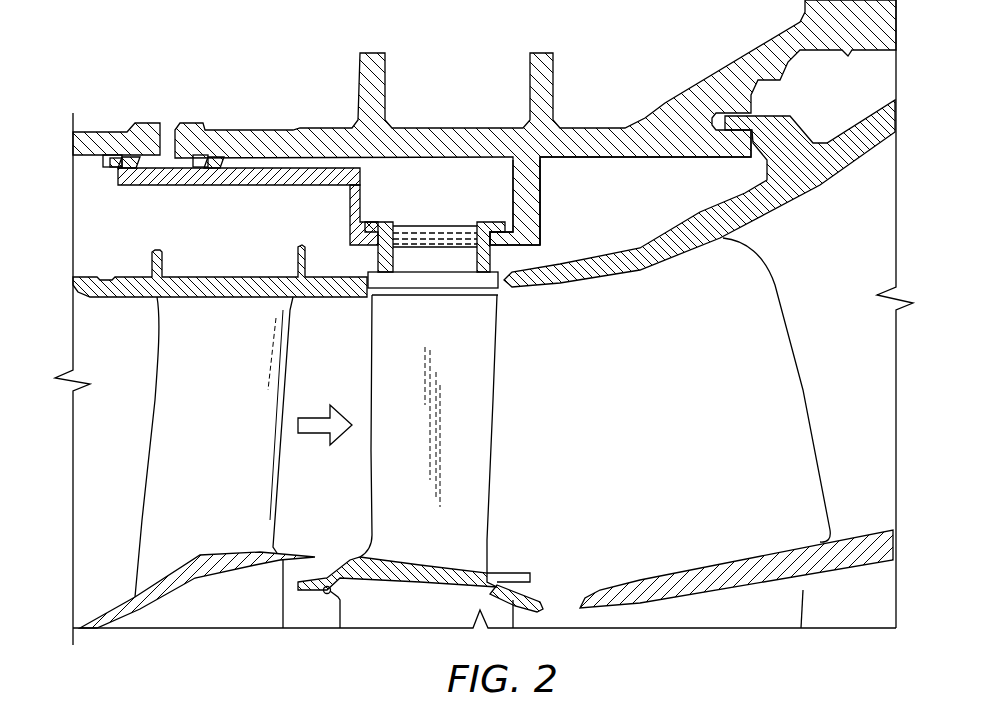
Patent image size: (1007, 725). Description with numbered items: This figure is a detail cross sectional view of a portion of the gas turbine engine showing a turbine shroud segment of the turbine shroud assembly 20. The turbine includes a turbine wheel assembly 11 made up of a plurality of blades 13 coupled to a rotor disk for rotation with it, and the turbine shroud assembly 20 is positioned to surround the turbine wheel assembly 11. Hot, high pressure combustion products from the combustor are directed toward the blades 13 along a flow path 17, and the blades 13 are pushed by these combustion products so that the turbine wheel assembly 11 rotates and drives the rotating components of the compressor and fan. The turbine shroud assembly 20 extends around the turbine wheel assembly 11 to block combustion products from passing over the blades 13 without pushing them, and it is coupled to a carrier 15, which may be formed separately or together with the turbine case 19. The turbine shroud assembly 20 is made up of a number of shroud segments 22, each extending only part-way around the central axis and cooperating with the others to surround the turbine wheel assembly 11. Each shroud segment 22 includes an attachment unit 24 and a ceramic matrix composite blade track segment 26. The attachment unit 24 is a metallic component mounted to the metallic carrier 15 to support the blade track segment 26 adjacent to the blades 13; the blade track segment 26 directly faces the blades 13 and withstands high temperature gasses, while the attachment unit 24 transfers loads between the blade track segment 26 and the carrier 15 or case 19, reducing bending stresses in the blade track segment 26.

The turbine wheel assembly 11 is at (553, 568).
The blades 13 is at (520, 452).
The carrier 15 is at (558, 225).
The flow path 17 is at (310, 436).
The turbine case 19 is at (291, 118).
The turbine shroud assembly 20 is at (130, 95).
The shroud segment 22 is at (598, 172).
The attachment unit 24 is at (392, 205).
The ceramic matrix composite blade track segment 26 is at (420, 305).